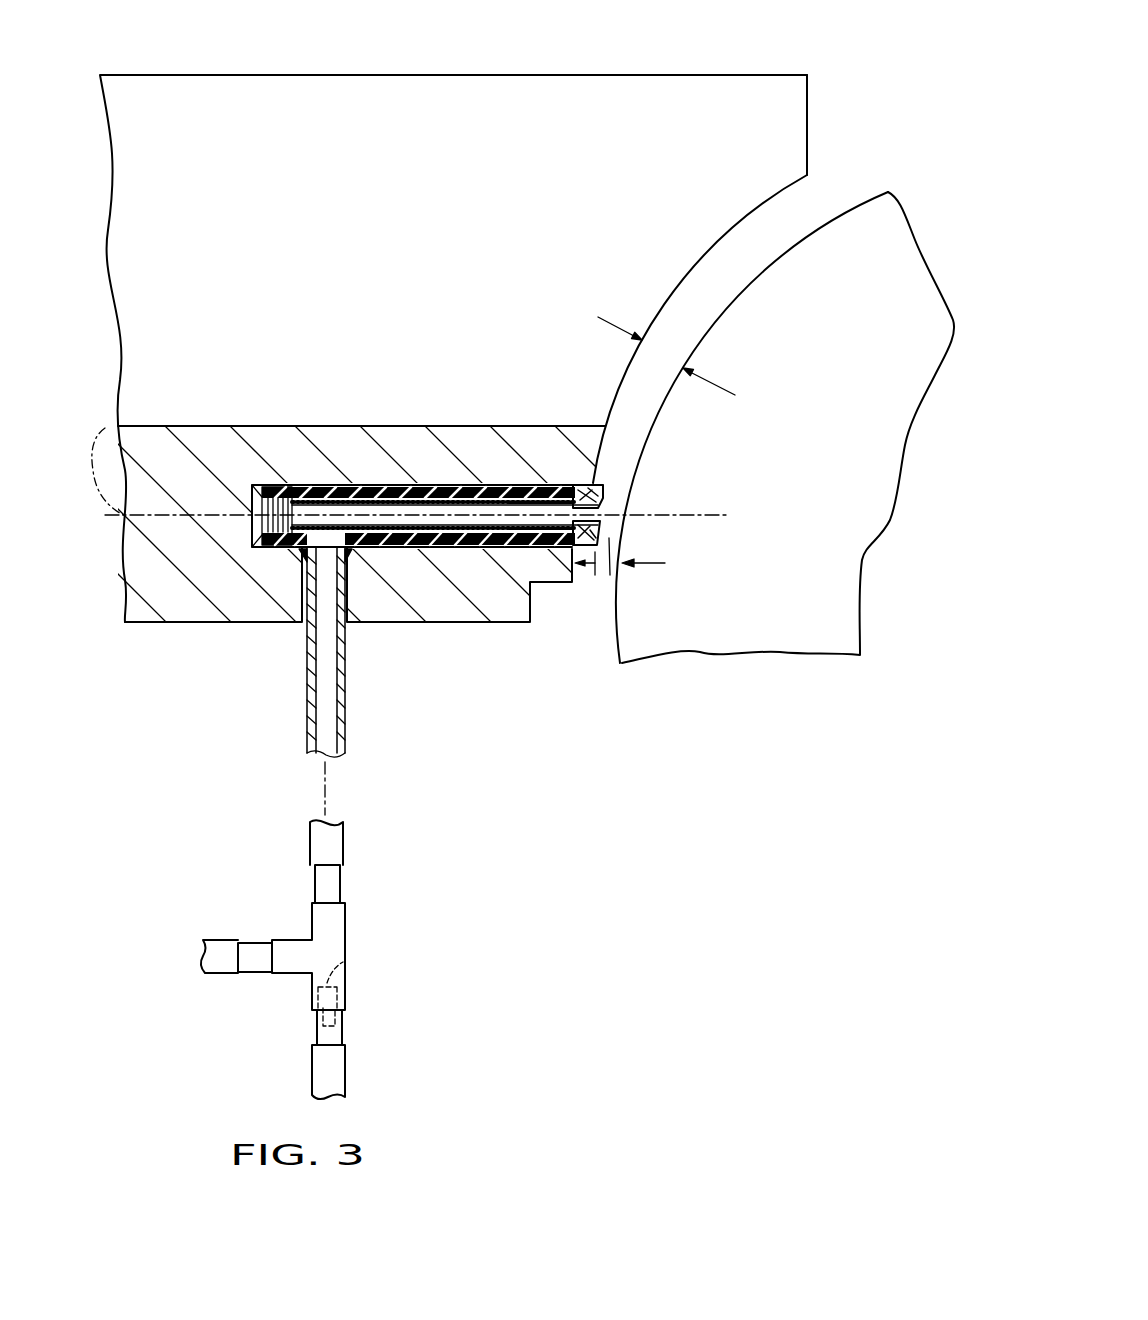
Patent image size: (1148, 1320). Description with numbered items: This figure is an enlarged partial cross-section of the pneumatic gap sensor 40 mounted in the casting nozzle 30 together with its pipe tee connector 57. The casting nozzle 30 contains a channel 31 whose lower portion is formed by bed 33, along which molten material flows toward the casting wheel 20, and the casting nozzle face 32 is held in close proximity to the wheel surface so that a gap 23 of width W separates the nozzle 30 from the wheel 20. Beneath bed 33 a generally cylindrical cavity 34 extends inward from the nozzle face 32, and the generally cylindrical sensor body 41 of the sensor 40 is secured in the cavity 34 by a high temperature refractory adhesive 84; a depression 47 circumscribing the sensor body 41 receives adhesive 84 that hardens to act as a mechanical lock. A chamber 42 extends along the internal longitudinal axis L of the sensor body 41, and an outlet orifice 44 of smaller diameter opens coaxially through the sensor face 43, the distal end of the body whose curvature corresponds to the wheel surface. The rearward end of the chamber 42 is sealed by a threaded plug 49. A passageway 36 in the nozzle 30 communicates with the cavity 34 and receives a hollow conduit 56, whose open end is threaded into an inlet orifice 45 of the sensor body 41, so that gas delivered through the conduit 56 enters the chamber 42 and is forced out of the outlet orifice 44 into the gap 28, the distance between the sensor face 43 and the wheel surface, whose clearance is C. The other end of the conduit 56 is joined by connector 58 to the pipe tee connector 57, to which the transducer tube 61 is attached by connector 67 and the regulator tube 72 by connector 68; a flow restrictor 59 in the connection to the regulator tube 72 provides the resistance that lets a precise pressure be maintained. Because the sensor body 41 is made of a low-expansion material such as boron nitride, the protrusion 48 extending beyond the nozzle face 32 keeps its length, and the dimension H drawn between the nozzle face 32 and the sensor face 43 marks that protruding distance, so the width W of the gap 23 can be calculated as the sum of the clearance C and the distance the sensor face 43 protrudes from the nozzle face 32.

The casting wheel 20 is at (853, 347).
The gap 23 is at (695, 318).
The gap 28 is at (610, 575).
The casting nozzle 30 is at (744, 62).
The channel 31 is at (374, 242).
The casting nozzle face 32 is at (715, 253).
The bed 33 is at (430, 425).
The cavity 34 is at (250, 492).
The passageway 36 is at (302, 600).
The pneumatic gap sensor 40 is at (440, 598).
The sensor body 41 is at (565, 493).
The chamber 42 is at (443, 488).
The sensor face 43 is at (598, 528).
The outlet orifice 44 is at (600, 507).
The inlet orifice 45 is at (303, 563).
The depression 47 is at (387, 545).
The protrusion 48 is at (588, 483).
The plug 49 is at (250, 533).
The conduit 56 is at (347, 698).
The pipe tee connector 57 is at (337, 925).
The connector 58 is at (340, 882).
The flow restrictor 59 is at (345, 962).
The transducer tube 61 is at (222, 940).
The connector 67 is at (255, 963).
The connector 68 is at (315, 1035).
The regulator tube 72 is at (347, 1070).
The high temperature refractory adhesive 84 is at (513, 485).
The width W is at (681, 363).
The clearance C is at (656, 563).
The longitudinal axis L is at (107, 463).
The gap H is at (585, 563).